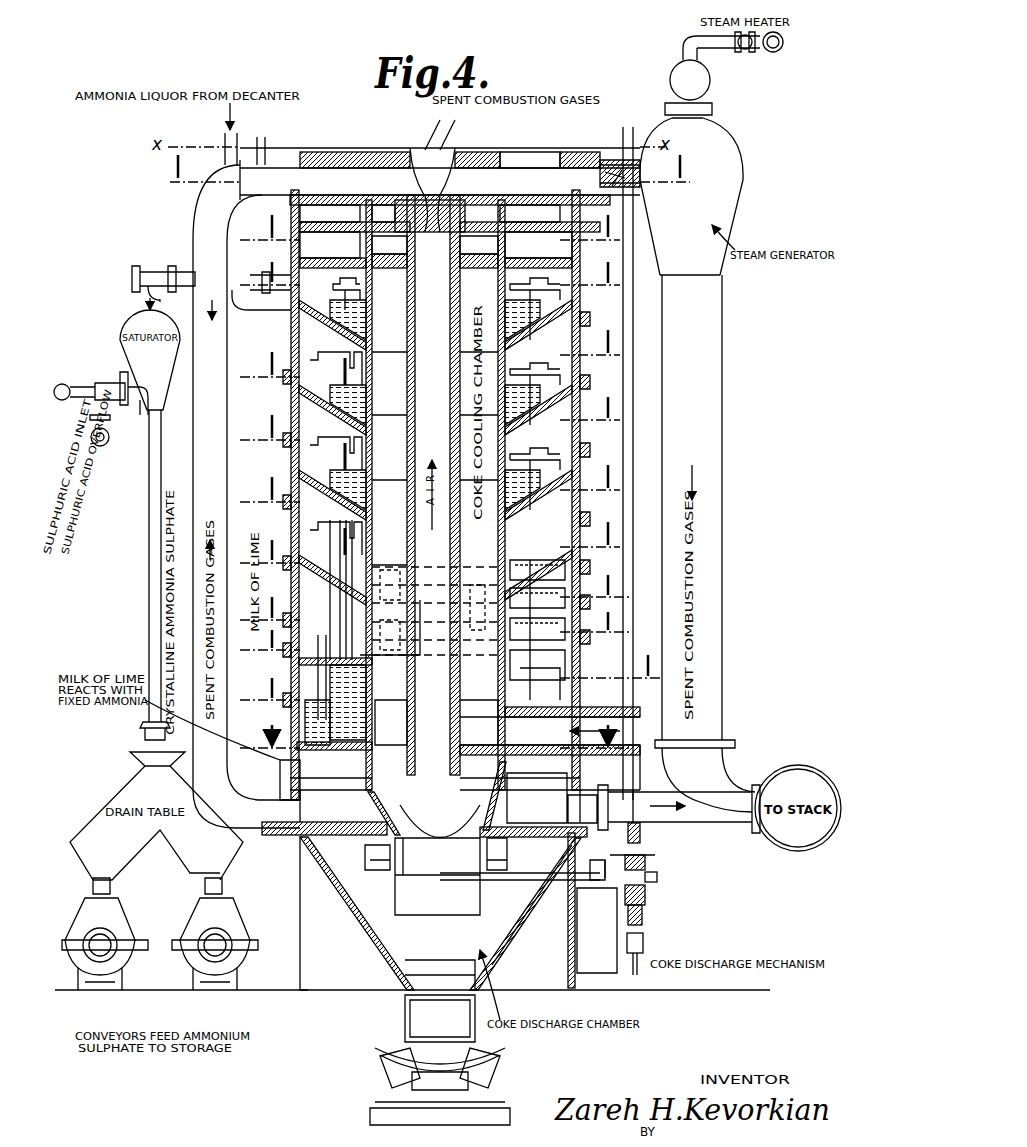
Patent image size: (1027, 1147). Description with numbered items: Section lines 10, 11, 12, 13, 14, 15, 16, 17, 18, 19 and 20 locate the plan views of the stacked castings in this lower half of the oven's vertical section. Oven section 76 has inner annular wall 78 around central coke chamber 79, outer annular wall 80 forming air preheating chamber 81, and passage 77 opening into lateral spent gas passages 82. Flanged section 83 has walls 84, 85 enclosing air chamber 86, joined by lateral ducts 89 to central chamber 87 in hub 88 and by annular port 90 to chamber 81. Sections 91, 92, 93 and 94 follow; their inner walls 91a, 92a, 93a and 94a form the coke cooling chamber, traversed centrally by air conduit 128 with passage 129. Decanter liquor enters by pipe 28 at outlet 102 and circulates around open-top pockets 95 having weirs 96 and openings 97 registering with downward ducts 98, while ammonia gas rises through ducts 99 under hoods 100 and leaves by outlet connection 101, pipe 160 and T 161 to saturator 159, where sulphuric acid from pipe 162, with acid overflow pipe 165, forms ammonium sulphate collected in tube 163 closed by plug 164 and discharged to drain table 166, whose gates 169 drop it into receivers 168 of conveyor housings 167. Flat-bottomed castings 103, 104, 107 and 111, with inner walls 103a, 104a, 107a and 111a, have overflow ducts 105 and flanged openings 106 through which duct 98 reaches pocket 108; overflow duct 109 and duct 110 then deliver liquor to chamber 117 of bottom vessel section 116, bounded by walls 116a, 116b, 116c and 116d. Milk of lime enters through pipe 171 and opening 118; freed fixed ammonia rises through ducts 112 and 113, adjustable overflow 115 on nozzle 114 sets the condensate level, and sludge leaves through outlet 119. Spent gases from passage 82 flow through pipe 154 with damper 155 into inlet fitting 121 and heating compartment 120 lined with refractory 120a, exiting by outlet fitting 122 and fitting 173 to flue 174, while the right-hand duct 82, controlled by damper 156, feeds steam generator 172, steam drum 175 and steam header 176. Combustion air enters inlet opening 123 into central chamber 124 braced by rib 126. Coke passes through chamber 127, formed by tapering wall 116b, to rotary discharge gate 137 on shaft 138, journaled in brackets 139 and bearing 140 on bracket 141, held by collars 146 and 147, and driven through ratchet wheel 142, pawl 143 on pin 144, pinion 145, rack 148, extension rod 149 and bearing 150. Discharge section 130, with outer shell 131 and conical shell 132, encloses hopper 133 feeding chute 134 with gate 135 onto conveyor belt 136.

The section line 10 is at (427, 183).
The section line 11 is at (441, 239).
The section line 12 is at (418, 285).
The section line 13 is at (442, 367).
The section line 14 is at (442, 431).
The section line 15 is at (442, 497).
The section line 16 is at (444, 556).
The section line 17 is at (449, 609).
The section line 18 is at (448, 642).
The section line 19 is at (467, 690).
The section line 20 is at (454, 747).
The ammonia liquor inlet pipe 28 is at (225, 140).
The steam inlet pipe 76 is at (605, 160).
The spent gas funnel 77 is at (443, 118).
The header compartment 78 is at (520, 212).
The header compartment 79 is at (384, 213).
The header wall 80 is at (611, 203).
The spent gas passage 81 is at (530, 150).
The spent combustion gas duct 82 is at (425, 186).
The header passage 83 is at (586, 232).
The header passage 84 is at (545, 232).
The header passage 85 is at (520, 234).
The header chamber 86 is at (446, 245).
The central air duct top 87 is at (426, 231).
The air duct wall 88 is at (430, 273).
The passage 89 is at (431, 242).
The header chamber 90 is at (336, 233).
The coke chamber section 91 is at (582, 264).
The coke chamber section 91a is at (388, 301).
The coke chamber section 92 is at (582, 330).
The coke chamber section 92a is at (393, 376).
The coke chamber section 93 is at (582, 392).
The coke chamber section 93a is at (393, 443).
The coke chamber section 94 is at (582, 460).
The coke chamber section 94a is at (393, 503).
The tray 95 is at (431, 402).
The feed pipe 96 is at (462, 382).
The tray wall 97 is at (431, 414).
The chute 98 is at (429, 432).
The liquor trough 99 is at (442, 513).
The overflow 100 is at (432, 453).
The inlet 101 is at (323, 268).
The inlet nozzle 102 is at (321, 280).
The chamber section 103 is at (585, 530).
The chamber section 103a is at (394, 523).
The tray 104 is at (589, 564).
The tray 104a is at (438, 606).
The plate 105 is at (436, 593).
The tube 106 is at (324, 592).
The tray 107 is at (590, 601).
The tray 107a is at (443, 633).
The pipe 108 is at (325, 640).
The pipe 109 is at (340, 670).
The pipe 110 is at (262, 745).
The tray 111 is at (591, 633).
The tray 111a is at (405, 690).
The trough 112 is at (521, 669).
The sump 113 is at (350, 719).
The outlet pipe 114 is at (618, 653).
The elbow 115 is at (600, 700).
The pipe 116 is at (590, 712).
The wall 116a is at (390, 738).
The hopper wall 116b is at (417, 777).
The hopper wall 116c is at (483, 779).
The wall 116d is at (549, 809).
The bottom slab 117 is at (466, 746).
The flange 118 is at (290, 770).
The flange 119 is at (290, 795).
The base chamber 120 is at (437, 797).
The deflector 120a is at (446, 814).
The bracket 121 is at (292, 830).
The outlet flange 122 is at (583, 809).
The gas outlet duct 123 is at (529, 734).
The coke cooling chamber bottom 124 is at (441, 731).
The chamber 126 is at (393, 716).
The hopper 127 is at (444, 798).
The air duct wall 128 is at (448, 440).
The air duct 129 is at (431, 356).
The bearing 130 is at (611, 836).
The discharge chamber wall 131 is at (570, 965).
The hopper wall 132 is at (505, 945).
The coke discharge chamber 133 is at (445, 938).
The discharge spout 134 is at (405, 1008).
The spout lining 135 is at (405, 1028).
The conveyor 136 is at (375, 1105).
The discharge valve 137 is at (442, 898).
The shaft 138 is at (518, 882).
The bearing 139 is at (370, 850).
The gear housing 140 is at (598, 913).
The base 141 is at (592, 982).
The gear 142 is at (645, 915).
The gear 143 is at (648, 860).
The bearing 144 is at (585, 863).
The gear 145 is at (648, 896).
The pinion 146 is at (658, 878).
The rod 147 is at (546, 928).
The gear 148 is at (645, 838).
The spent gas duct 149 is at (632, 425).
The drive 150 is at (645, 945).
The spent gas pipe 154 is at (193, 210).
The ammonia liquor pipe 155 is at (258, 135).
The steam pipe 156 is at (605, 160).
The saturator 159 is at (125, 325).
The pipe 160 is at (182, 272).
The valve 161 is at (150, 270).
The sulphuric acid inlet 162 is at (68, 385).
The ammonium sulphate pipe 163 is at (149, 558).
The outlet 164 is at (148, 736).
The acid overflow 165 is at (96, 448).
The drain table 166 is at (120, 790).
The conveyor 167 is at (110, 995).
The conveyor housing 168 is at (203, 922).
The outlet 169 is at (112, 886).
The milk of lime pipe 171 is at (262, 452).
The steam generator 172 is at (725, 185).
The elbow 173 is at (720, 772).
The stack connection 174 is at (800, 851).
The steam dome 175 is at (712, 80).
The steam heater 176 is at (785, 40).